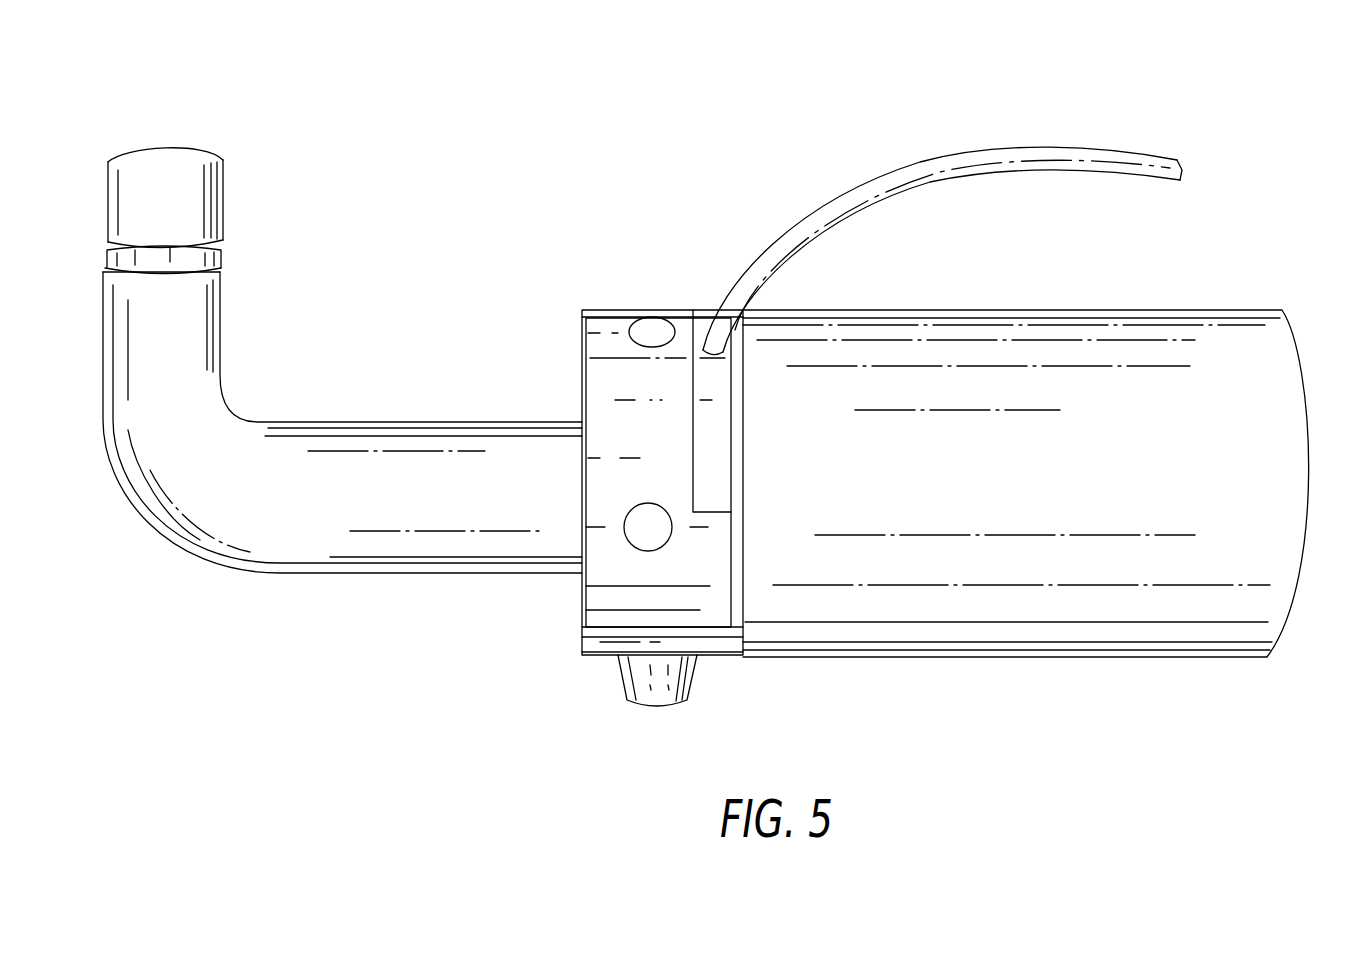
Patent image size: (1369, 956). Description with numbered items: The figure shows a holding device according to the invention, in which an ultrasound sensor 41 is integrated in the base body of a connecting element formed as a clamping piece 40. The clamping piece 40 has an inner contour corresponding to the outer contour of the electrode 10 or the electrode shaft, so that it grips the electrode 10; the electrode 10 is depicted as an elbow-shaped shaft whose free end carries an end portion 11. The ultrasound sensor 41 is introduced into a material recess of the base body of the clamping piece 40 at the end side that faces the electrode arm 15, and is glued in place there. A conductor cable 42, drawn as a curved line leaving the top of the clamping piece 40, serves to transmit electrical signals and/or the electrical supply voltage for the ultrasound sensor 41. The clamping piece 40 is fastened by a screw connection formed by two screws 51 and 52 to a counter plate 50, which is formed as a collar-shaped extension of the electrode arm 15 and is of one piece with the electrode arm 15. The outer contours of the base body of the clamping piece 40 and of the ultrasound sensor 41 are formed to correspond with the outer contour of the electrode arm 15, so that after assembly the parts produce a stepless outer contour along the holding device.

The electrode 10 is at (390, 435).
The pipe end cap 11 is at (134, 168).
The electrode arm 15 is at (1270, 550).
The clamping piece 40 is at (671, 488).
The ultrasound sensor 41 is at (708, 385).
The conductor cable 42 is at (975, 170).
The counter plate 50 is at (598, 653).
The screw 51 is at (690, 683).
The screw 52 is at (658, 332).